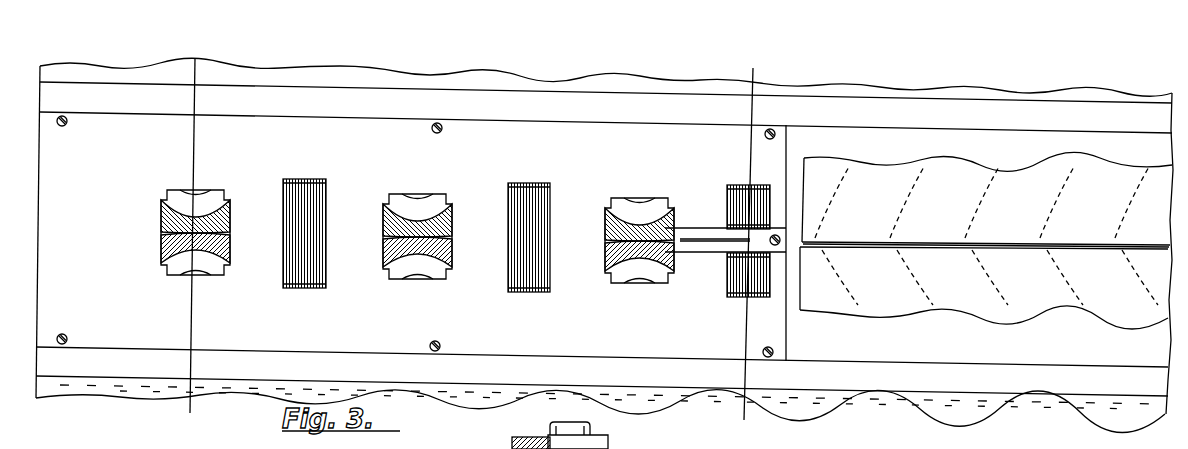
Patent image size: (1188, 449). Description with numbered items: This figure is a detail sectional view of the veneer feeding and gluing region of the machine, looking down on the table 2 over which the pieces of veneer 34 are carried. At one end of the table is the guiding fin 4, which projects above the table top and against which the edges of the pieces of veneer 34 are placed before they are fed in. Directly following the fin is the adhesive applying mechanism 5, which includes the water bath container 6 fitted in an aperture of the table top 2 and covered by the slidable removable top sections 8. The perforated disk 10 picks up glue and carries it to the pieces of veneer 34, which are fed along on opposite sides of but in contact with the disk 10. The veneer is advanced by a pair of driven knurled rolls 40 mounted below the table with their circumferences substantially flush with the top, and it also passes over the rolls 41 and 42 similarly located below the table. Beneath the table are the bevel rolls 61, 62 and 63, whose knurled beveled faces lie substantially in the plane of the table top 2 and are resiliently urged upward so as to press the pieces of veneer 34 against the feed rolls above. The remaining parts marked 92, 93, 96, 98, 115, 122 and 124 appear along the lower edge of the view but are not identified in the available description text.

The table 2 is at (83, 393).
The guiding fin 4 is at (1103, 250).
The adhesive applying mechanism 5 is at (756, 70).
The water bath container 6 is at (190, 59).
The slidable removable top sections 8 is at (1098, 358).
The disk 10 is at (843, 242).
The pieces of veneer 34 is at (975, 182).
The driven knurled rolls 40 is at (730, 196).
The roll 41 is at (532, 192).
The roll 42 is at (307, 186).
The bevel roll 61 is at (165, 222).
The bevel roll 62 is at (385, 222).
The bevel roll 63 is at (607, 230).
The bearing block 92 is at (578, 435).
The bracket 93 is at (745, 441).
The shaft 96 is at (239, 441).
The support 98 is at (201, 440).
The bolt 115 is at (468, 441).
The arm 122 is at (688, 440).
The link 124 is at (852, 434).